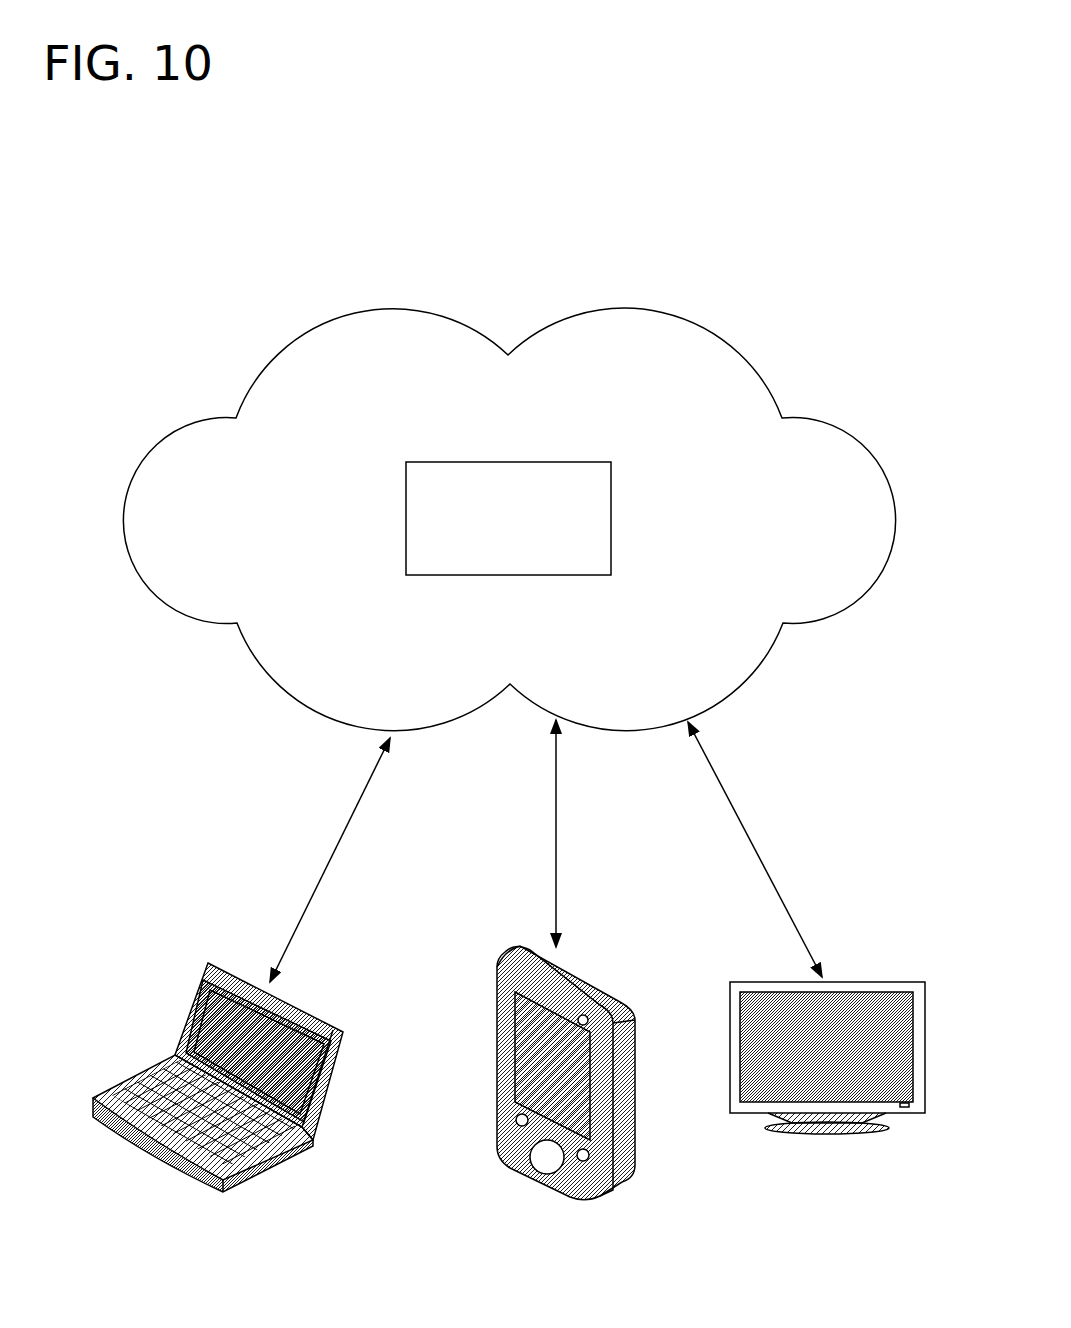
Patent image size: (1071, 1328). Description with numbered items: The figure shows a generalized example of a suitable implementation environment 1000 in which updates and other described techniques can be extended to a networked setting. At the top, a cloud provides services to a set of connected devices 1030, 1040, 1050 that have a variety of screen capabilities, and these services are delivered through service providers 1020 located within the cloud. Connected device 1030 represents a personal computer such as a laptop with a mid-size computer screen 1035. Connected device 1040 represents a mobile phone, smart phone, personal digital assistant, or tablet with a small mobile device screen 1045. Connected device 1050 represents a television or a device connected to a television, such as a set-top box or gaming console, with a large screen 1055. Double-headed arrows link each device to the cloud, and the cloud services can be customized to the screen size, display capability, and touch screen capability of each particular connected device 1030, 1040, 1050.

The implementation environment 1000 is at (860, 303).
The service providers 1020 is at (508, 518).
The connected device 1030 is at (106, 1090).
The computer screen 1035 is at (275, 1061).
The connected device 1040 is at (510, 946).
The mobile device screen 1045 is at (580, 1084).
The connected device 1050 is at (897, 981).
The large screen 1055 is at (850, 1057).